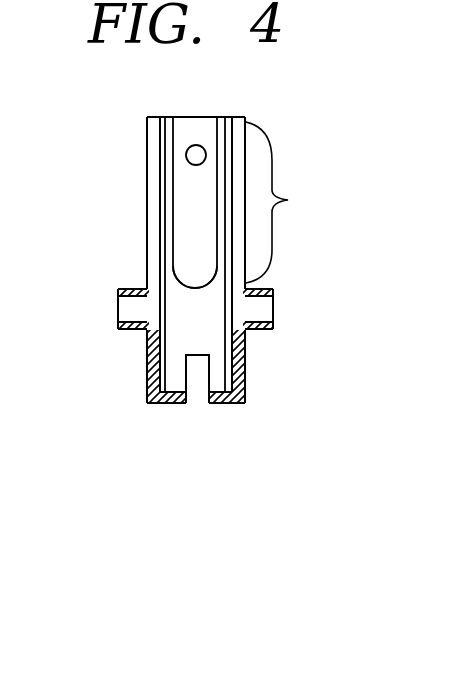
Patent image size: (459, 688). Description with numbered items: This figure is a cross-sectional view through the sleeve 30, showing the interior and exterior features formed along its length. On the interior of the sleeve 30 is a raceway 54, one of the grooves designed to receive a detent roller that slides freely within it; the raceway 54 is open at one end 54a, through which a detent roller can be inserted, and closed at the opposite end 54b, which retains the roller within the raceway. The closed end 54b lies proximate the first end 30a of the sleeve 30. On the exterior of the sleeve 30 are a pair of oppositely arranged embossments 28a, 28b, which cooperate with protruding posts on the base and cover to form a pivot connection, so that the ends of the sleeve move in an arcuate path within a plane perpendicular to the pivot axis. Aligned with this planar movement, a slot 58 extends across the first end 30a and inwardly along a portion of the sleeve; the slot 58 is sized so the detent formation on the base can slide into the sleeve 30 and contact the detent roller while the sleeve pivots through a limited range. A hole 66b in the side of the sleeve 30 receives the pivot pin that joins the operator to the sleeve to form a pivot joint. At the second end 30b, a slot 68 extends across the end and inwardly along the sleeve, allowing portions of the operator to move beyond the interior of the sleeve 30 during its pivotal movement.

The sleeve 30 is at (147, 221).
The first end of the sleeve 30a is at (175, 405).
The second end of the sleeve 30b is at (227, 116).
The raceway 54 is at (190, 202).
The open end of the raceway 54a is at (190, 116).
The closed end of the raceway 54b is at (193, 283).
The hole 66b is at (188, 150).
The slot 68 is at (288, 202).
The embossment 28a is at (265, 330).
The embossment 28b is at (130, 329).
The slot 58 is at (196, 404).